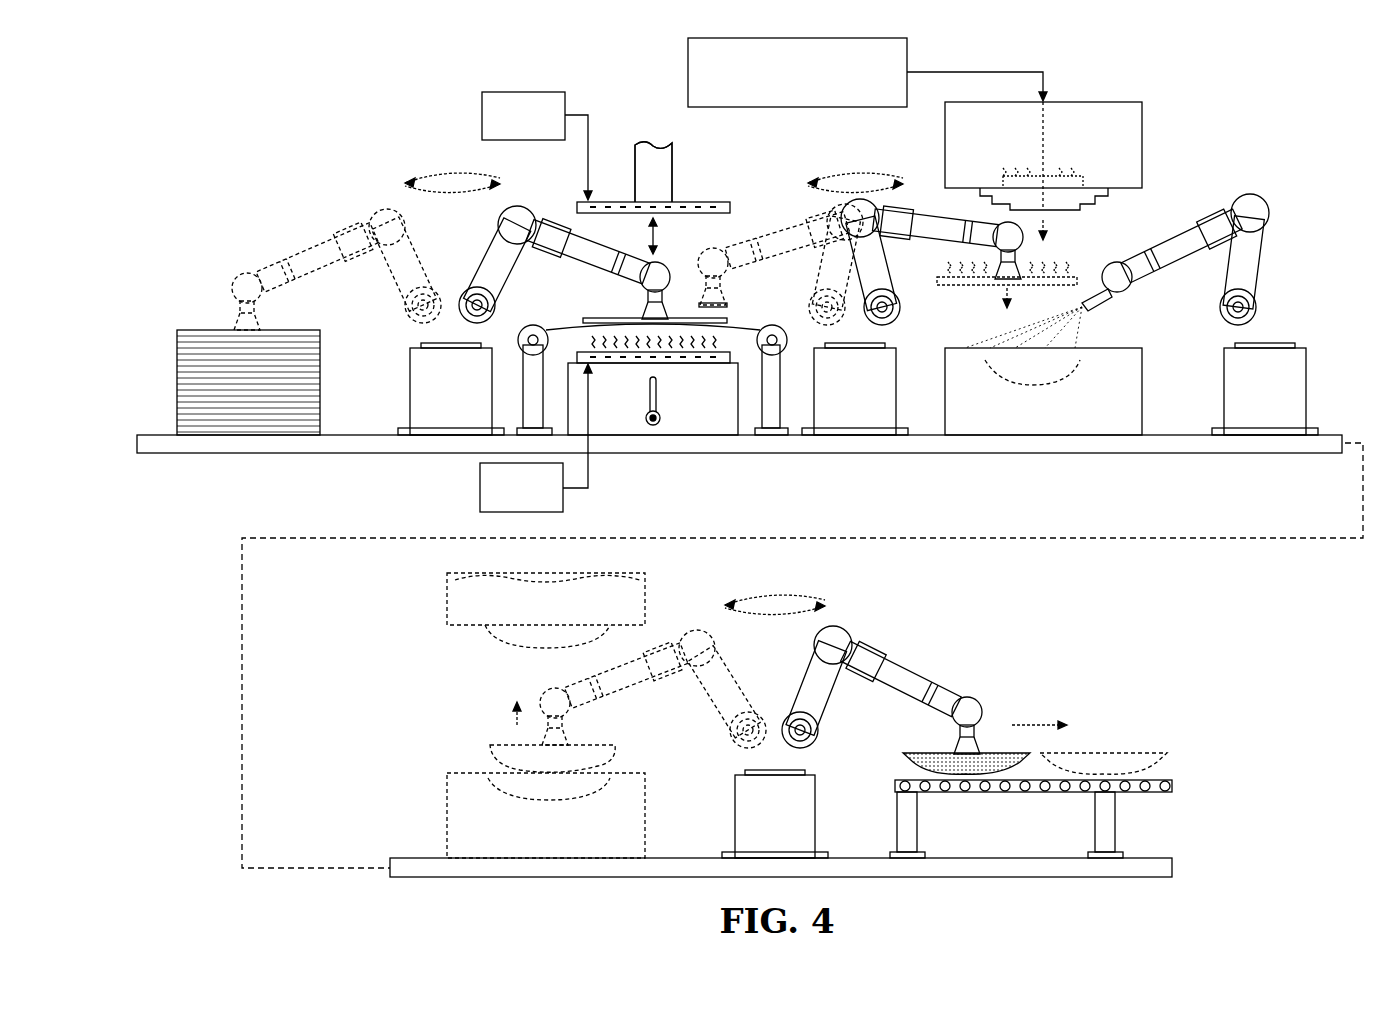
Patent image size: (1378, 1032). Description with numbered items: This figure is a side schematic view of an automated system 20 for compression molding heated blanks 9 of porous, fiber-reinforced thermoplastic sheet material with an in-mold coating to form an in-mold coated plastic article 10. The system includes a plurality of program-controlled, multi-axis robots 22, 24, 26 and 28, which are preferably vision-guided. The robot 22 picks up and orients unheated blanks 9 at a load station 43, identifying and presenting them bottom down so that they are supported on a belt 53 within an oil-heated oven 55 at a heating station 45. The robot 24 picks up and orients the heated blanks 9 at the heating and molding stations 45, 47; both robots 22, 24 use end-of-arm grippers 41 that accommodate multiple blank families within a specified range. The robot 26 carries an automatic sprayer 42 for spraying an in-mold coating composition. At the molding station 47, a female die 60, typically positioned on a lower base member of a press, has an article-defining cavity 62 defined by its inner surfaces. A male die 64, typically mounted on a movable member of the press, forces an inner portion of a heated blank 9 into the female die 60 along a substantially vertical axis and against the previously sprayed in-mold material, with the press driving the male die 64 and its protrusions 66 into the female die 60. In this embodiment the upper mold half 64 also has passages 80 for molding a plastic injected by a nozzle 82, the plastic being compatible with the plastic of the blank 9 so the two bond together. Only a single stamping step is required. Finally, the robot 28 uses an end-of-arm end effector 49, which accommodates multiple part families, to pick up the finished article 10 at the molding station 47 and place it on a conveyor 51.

The blank 9 is at (240, 330).
The in-mold coated plastic article 10 is at (810, 713).
The system 20 is at (1162, 287).
The robot 22 is at (485, 260).
The robot 24 is at (915, 175).
The robot 26 is at (1262, 268).
The robot 28 is at (915, 672).
The gripper 41 is at (645, 318).
The automatic sprayer 42 is at (1120, 292).
The load station 43 is at (212, 272).
The heating station 45 is at (622, 104).
The molding station 47 is at (832, 333).
The end effector 49 is at (985, 738).
The conveyor 51 is at (1150, 792).
The belt 53 is at (745, 320).
The oil-heated oven 55 is at (672, 192).
The female die 60 is at (826, 603).
The article-defining cavity 62 is at (1030, 383).
The male die 64 is at (823, 350).
The protrusions 66 is at (985, 198).
The passages 80 is at (1045, 145).
The nozzle 82 is at (1048, 98).